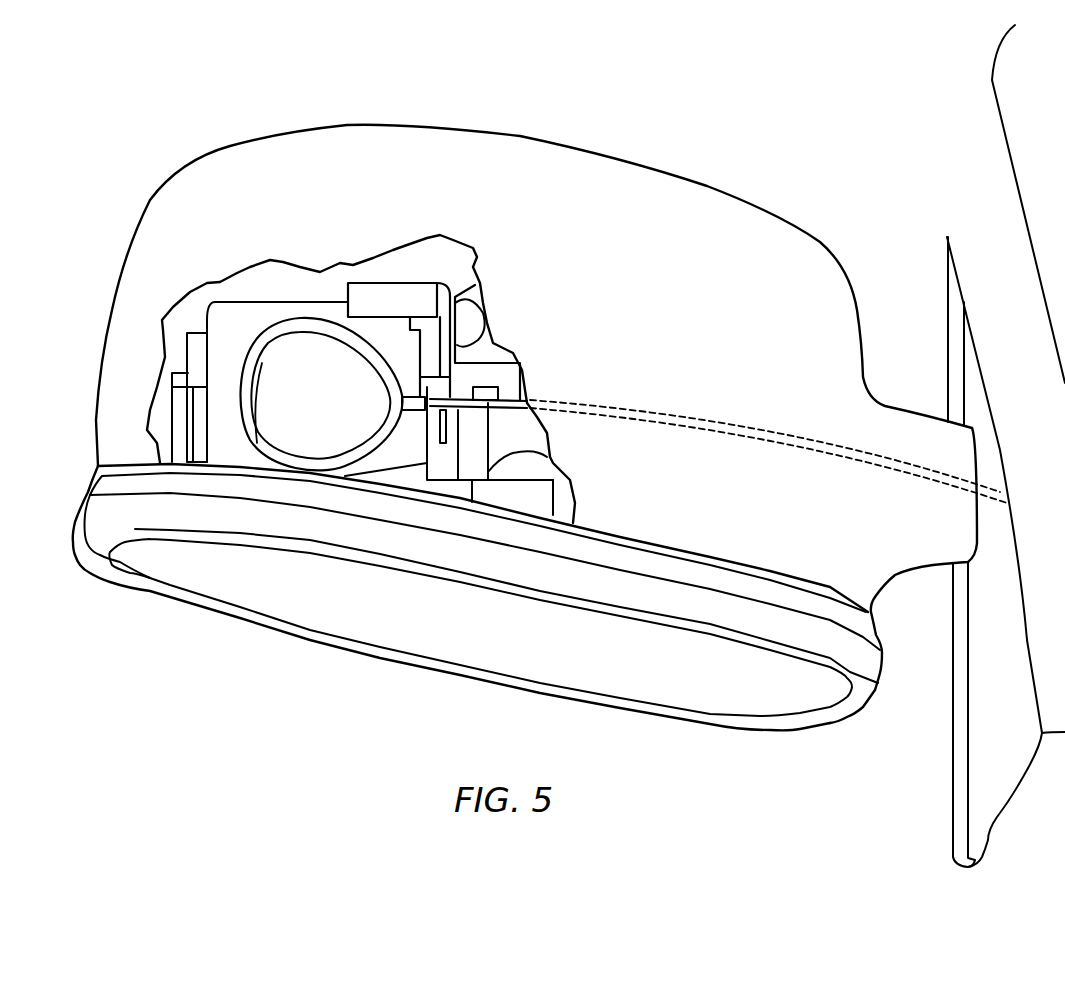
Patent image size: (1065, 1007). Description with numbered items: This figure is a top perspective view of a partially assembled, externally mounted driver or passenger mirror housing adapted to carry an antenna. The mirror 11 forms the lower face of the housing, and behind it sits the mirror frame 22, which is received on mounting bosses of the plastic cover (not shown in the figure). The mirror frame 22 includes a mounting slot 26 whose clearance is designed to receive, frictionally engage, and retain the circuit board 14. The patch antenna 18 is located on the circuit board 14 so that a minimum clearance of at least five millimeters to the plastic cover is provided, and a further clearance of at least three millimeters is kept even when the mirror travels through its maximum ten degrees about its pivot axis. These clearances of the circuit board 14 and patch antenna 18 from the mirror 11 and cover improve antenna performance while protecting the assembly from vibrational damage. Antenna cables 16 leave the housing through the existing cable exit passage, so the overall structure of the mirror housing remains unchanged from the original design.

The mirror 11 is at (341, 622).
The circuit board 14 is at (238, 312).
The antenna cables 16 is at (453, 357).
The patch antenna 18 is at (317, 377).
The mirror frame 22 is at (435, 282).
The mounting slot 26 is at (400, 298).